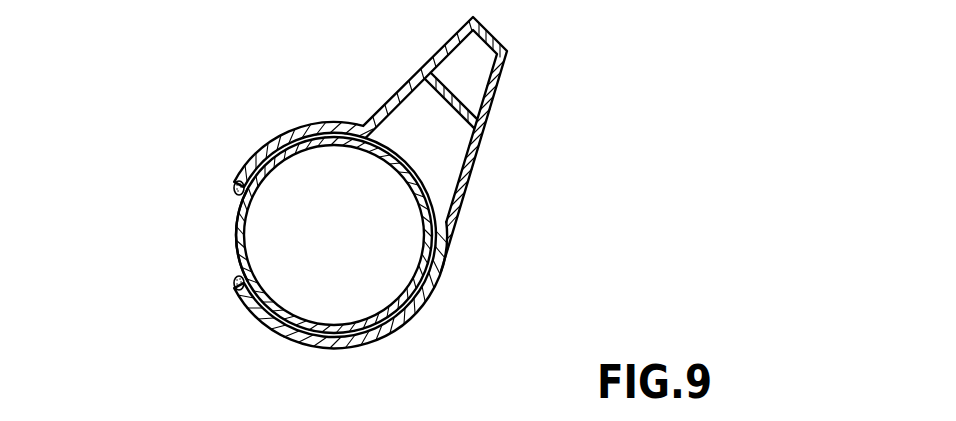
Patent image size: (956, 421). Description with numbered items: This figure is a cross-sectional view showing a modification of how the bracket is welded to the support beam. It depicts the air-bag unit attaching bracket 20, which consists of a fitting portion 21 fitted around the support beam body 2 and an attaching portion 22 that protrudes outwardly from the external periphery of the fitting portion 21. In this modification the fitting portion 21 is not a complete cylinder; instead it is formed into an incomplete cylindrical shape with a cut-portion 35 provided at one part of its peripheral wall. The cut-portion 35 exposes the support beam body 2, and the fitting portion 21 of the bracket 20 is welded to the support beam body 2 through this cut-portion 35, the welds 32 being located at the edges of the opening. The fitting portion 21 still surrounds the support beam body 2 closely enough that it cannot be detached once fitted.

The support beam body 2 is at (291, 150).
The air-bag unit attaching bracket 20 is at (435, 182).
The fitting portion 21 is at (418, 300).
The attaching portion 22 is at (476, 155).
The adhesive 32 is at (236, 193).
The cut-portion 35 is at (234, 233).